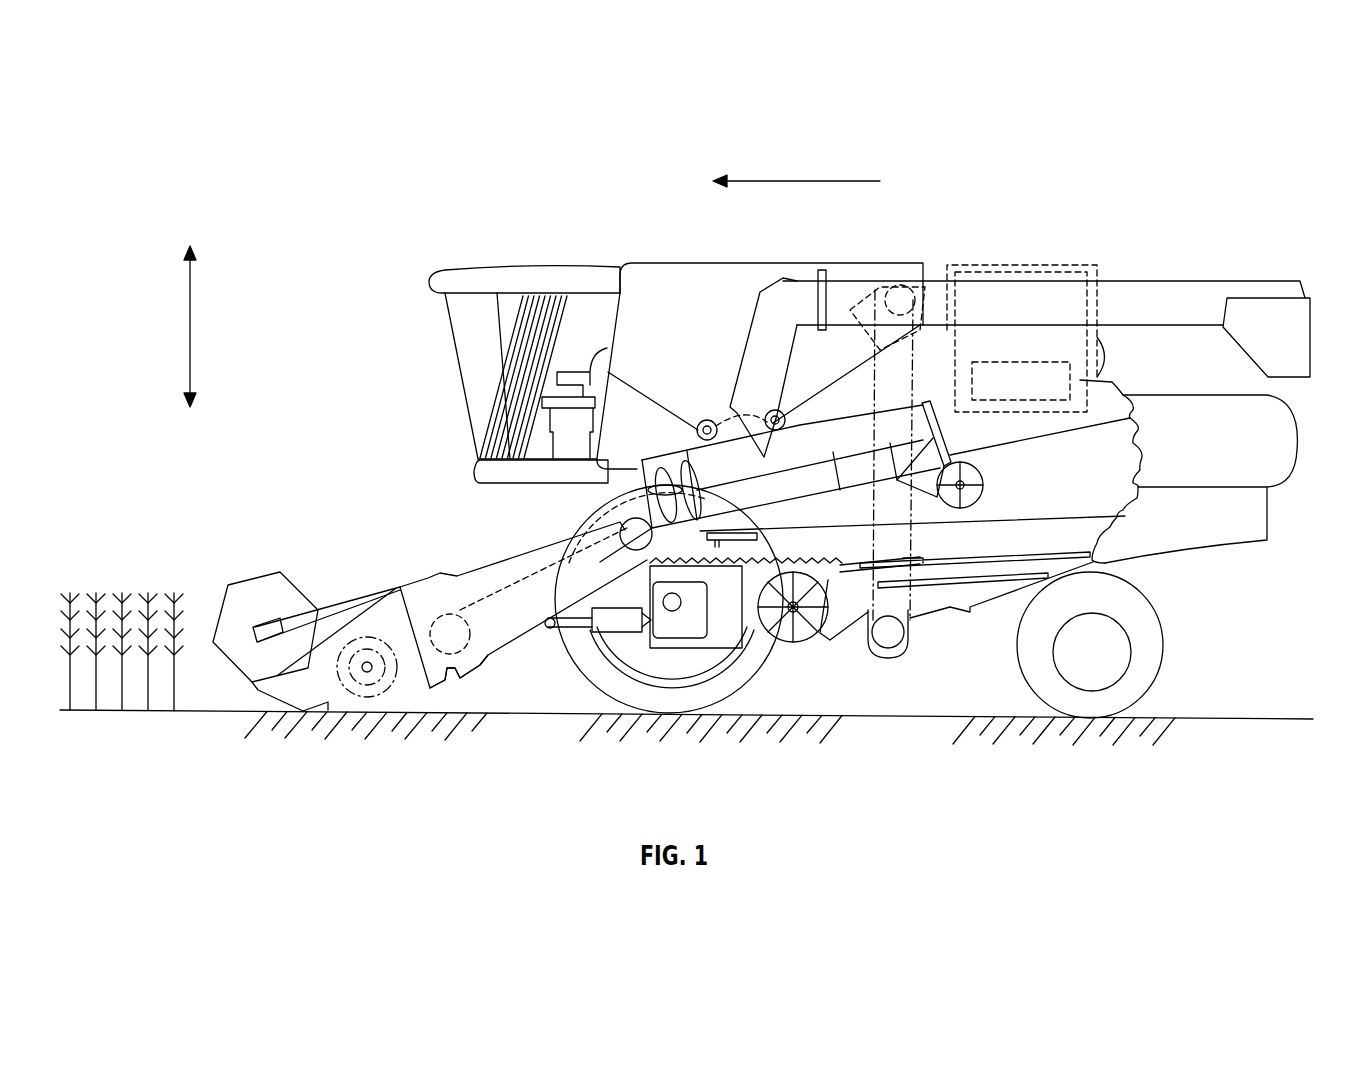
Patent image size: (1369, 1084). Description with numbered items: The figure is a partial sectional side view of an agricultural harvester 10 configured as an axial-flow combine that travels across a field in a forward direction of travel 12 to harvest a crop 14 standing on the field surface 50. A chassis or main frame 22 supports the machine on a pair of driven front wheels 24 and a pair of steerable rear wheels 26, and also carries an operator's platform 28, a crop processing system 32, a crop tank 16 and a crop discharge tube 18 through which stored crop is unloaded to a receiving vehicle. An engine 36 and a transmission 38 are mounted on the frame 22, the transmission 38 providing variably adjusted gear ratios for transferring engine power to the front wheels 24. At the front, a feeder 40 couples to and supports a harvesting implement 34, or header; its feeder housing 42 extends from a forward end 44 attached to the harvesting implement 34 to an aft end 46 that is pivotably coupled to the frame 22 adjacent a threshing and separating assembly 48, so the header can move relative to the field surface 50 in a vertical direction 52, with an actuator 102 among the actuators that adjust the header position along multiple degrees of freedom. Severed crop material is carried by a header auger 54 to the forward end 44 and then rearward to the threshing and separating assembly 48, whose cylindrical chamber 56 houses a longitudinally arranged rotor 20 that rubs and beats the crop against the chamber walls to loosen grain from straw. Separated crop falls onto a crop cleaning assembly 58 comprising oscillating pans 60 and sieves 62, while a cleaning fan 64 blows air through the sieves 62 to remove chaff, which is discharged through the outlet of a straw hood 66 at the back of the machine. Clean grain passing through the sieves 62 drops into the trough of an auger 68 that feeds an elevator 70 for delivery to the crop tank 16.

The agricultural harvester 10 is at (487, 238).
The forward direction of travel 12 is at (822, 181).
The crop 14 is at (135, 580).
The crop tank 16 is at (695, 260).
The crop discharge tube 18 is at (1143, 293).
The rotor 20 is at (670, 460).
The frame 22 is at (1103, 567).
The front wheels 24 is at (598, 690).
The rear wheels 26 is at (1150, 655).
The operator's platform 28 is at (478, 474).
The crop processing system 32 is at (985, 507).
The harvesting implement 34 is at (265, 565).
The engine 36 is at (985, 270).
The transmission 38 is at (1000, 362).
The feeder 40 is at (470, 376).
The feeder housing 42 is at (497, 653).
The forward end 44 is at (400, 617).
The aft end 46 is at (620, 513).
The threshing and separating assembly 48 is at (812, 453).
The field surface 50 is at (1240, 718).
The vertical direction 52 is at (190, 330).
The header auger 54 is at (377, 692).
The cylindrical chamber 56 is at (853, 425).
The crop cleaning assembly 58 is at (858, 657).
The pans 60 is at (797, 548).
The sieves 62 is at (925, 565).
The cleaning fan 64 is at (793, 612).
The straw hood 66 is at (1277, 453).
The auger 68 is at (888, 648).
The elevator 70 is at (913, 347).
The actuator 102 is at (590, 688).